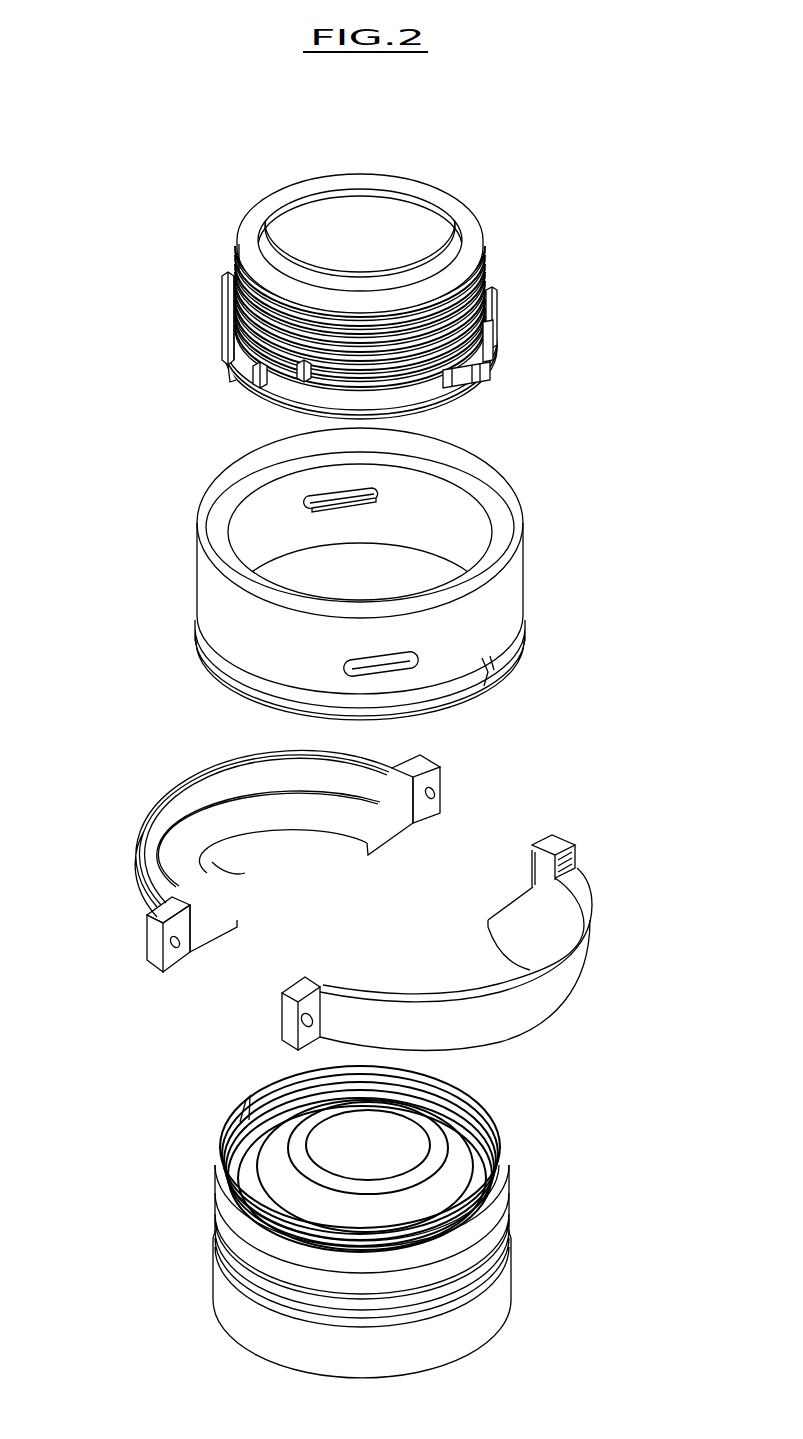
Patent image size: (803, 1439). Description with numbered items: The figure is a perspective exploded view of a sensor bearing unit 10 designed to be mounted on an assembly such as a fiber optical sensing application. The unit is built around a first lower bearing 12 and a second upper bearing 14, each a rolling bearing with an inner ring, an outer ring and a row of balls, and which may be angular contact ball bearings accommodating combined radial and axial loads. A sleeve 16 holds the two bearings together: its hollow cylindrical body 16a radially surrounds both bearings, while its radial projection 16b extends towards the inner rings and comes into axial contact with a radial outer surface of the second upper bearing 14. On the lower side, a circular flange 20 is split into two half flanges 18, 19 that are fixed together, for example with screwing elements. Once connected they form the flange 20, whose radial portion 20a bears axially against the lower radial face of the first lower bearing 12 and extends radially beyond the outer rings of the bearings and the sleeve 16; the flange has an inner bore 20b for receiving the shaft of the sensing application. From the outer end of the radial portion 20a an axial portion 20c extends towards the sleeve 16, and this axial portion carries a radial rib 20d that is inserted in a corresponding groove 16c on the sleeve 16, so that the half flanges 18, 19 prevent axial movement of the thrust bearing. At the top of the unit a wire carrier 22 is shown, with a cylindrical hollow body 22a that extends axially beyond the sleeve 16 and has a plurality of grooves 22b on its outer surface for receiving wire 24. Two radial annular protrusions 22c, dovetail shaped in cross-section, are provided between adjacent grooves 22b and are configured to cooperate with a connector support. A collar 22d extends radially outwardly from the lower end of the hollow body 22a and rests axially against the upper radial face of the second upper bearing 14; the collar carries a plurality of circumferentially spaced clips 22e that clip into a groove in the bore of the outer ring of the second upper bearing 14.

The sensor bearing unit 10 is at (151, 186).
The first lower bearing 12 is at (500, 1305).
The second upper bearing 14 is at (502, 1213).
The sleeve 16 is at (527, 567).
The hollow cylindrical body 16a is at (503, 600).
The radial projection 16b is at (467, 490).
The groove 16c is at (507, 648).
The half flange 18 is at (158, 793).
The half flange 19 is at (577, 973).
The flange 20 is at (590, 852).
The radial portion 20a is at (185, 880).
The inner bore 20b is at (232, 866).
The axial portion 20c is at (150, 946).
The radial rib 20d is at (172, 906).
The wire carrier 22 is at (470, 281).
The cylindrical hollow body 22a is at (234, 323).
The grooves 22b is at (303, 378).
The radial annular protrusions 22c is at (228, 344).
The collar 22d is at (488, 360).
The clips 22e is at (437, 408).
The wire 24 is at (485, 333).